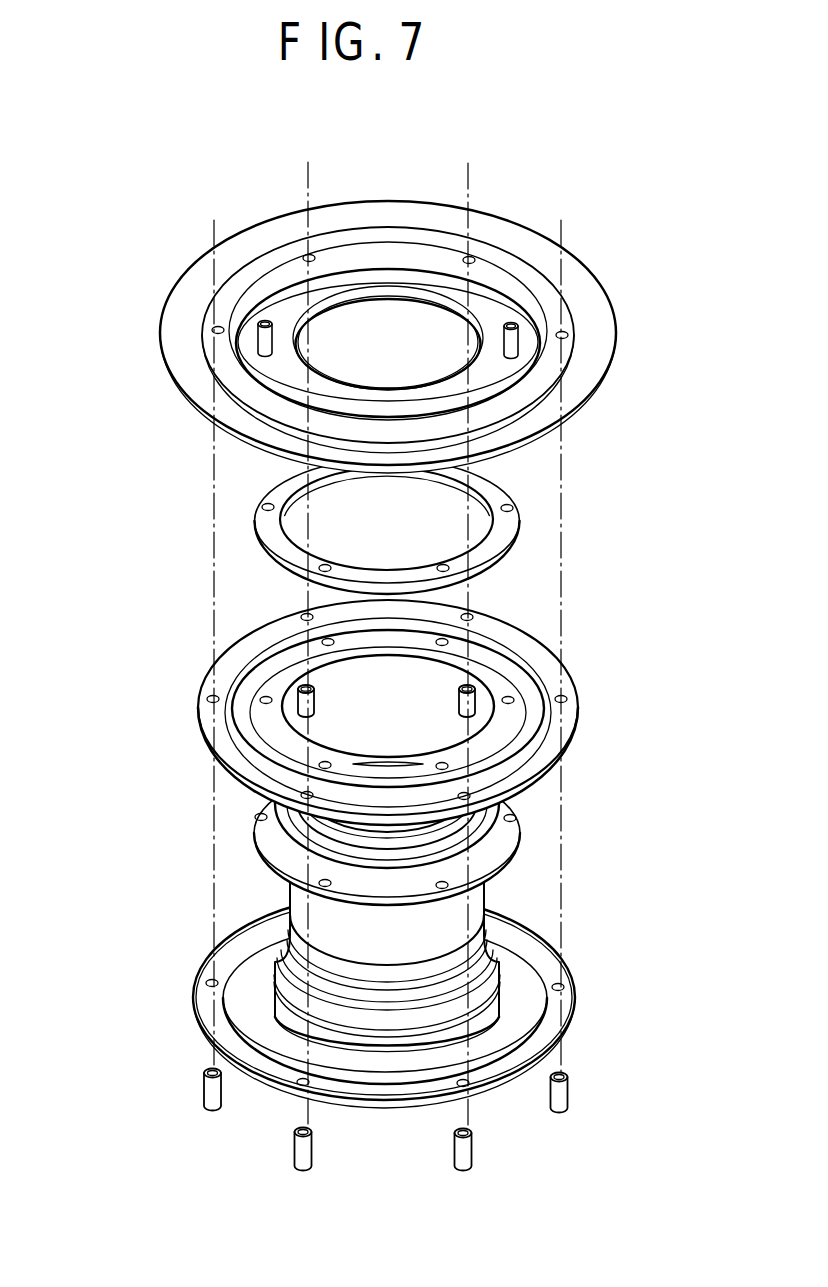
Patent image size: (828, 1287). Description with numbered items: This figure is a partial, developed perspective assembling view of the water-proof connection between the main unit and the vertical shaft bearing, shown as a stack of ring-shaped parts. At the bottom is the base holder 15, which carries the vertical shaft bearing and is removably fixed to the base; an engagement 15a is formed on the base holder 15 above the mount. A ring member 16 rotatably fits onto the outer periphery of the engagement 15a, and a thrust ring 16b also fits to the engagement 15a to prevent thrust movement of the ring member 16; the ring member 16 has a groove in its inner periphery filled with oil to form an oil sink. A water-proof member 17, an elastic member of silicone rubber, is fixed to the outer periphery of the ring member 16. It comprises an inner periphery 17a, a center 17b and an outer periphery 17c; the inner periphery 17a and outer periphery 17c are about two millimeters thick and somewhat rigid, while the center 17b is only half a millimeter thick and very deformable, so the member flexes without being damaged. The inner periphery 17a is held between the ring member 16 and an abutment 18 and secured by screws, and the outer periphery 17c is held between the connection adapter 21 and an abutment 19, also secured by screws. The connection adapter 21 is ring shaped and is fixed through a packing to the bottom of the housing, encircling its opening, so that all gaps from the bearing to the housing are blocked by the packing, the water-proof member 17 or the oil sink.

The base holder 15 is at (365, 967).
The engagement 15a is at (282, 977).
The ring member 16 is at (263, 840).
The thrust ring 16b is at (293, 365).
The water-proof member 17 is at (436, 706).
The inner periphery 17a is at (492, 737).
The center 17b is at (535, 715).
The outer periphery 17c is at (537, 645).
The abutment 18 is at (520, 522).
The abutment 19 is at (568, 1005).
The connection adapter 21 is at (618, 336).